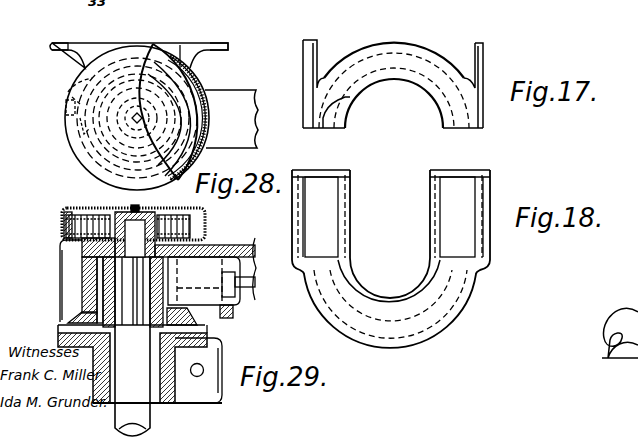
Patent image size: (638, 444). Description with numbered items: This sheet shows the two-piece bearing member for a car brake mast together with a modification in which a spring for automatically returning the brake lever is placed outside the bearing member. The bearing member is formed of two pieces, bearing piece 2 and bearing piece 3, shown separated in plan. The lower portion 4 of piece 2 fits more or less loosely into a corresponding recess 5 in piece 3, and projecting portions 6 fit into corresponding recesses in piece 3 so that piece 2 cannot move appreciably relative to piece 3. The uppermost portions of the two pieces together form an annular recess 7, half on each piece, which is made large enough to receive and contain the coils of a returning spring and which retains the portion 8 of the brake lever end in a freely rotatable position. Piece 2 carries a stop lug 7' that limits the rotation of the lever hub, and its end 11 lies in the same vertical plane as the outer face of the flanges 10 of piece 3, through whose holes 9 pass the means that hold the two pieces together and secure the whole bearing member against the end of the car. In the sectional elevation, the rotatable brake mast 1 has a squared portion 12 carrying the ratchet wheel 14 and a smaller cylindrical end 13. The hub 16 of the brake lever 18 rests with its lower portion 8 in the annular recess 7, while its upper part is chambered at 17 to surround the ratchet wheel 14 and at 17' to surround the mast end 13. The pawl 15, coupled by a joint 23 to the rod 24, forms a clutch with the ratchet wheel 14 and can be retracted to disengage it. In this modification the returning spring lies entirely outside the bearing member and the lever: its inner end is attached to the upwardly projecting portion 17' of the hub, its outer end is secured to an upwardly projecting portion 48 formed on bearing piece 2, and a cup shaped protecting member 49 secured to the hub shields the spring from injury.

In FIG. 29, the brake mast 1 is at (132, 346).
In FIG. 28, the bearing piece 2 is at (183, 46).
In FIG. 29, the bearing piece 2 is at (168, 404).
In FIG. 17, the bearing piece 2 is at (400, 43).
In FIG. 28, the bearing piece 3 is at (79, 43).
In FIG. 29, the bearing piece 3 is at (210, 404).
In FIG. 18, the bearing piece 3 is at (458, 284).
In FIG. 18, the lower portion of bearing piece 4 is at (284, 285).
In FIG. 18, the recess 5 is at (390, 234).
In FIG. 17, the projecting portions 6 is at (307, 40).
In FIG. 17, the annular recess 7 is at (443, 39).
In FIG. 18, the annular recess 7 is at (451, 334).
In FIG. 29, the stop lug 7' is at (45, 285).
In FIG. 17, the stop lug 7' is at (316, 112).
In FIG. 29, the portion of brake lever end 8 is at (85, 323).
In FIG. 29, the holes 9 is at (201, 367).
In FIG. 18, the holes 9 is at (322, 177).
In FIG. 28, the flanges 10 is at (55, 43).
In FIG. 29, the flanges 10 is at (214, 385).
In FIG. 18, the flanges 10 is at (297, 170).
In FIG. 28, the end of bearing piece 11 is at (135, 43).
In FIG. 29, the squared portion of brake mast 12 is at (121, 283).
In FIG. 29, the cylindrical end of brake mast 13 is at (135, 231).
In FIG. 29, the ratchet wheel 14 is at (100, 285).
In FIG. 29, the pawl 15 is at (204, 281).
In FIG. 29, the hub of brake lever 16 is at (51, 280).
In FIG. 29, the chamber 17 is at (202, 324).
In FIG. 28, the upwardly projecting portion of hub 17' is at (192, 112).
In FIG. 29, the upwardly projecting portion of hub 17' is at (169, 205).
In FIG. 28, the brake lever 18 is at (231, 119).
In FIG. 29, the brake lever 18 is at (238, 245).
In FIG. 29, the joint 23 is at (236, 306).
In FIG. 29, the rod 24 is at (256, 284).
In FIG. 28, the upwardly projecting portion of bearing member 48 is at (65, 95).
In FIG. 29, the upwardly projecting portion of bearing member 48 is at (70, 213).
In FIG. 28, the cup shaped protecting member 49 is at (84, 134).
In FIG. 29, the cup shaped protecting member 49 is at (63, 226).